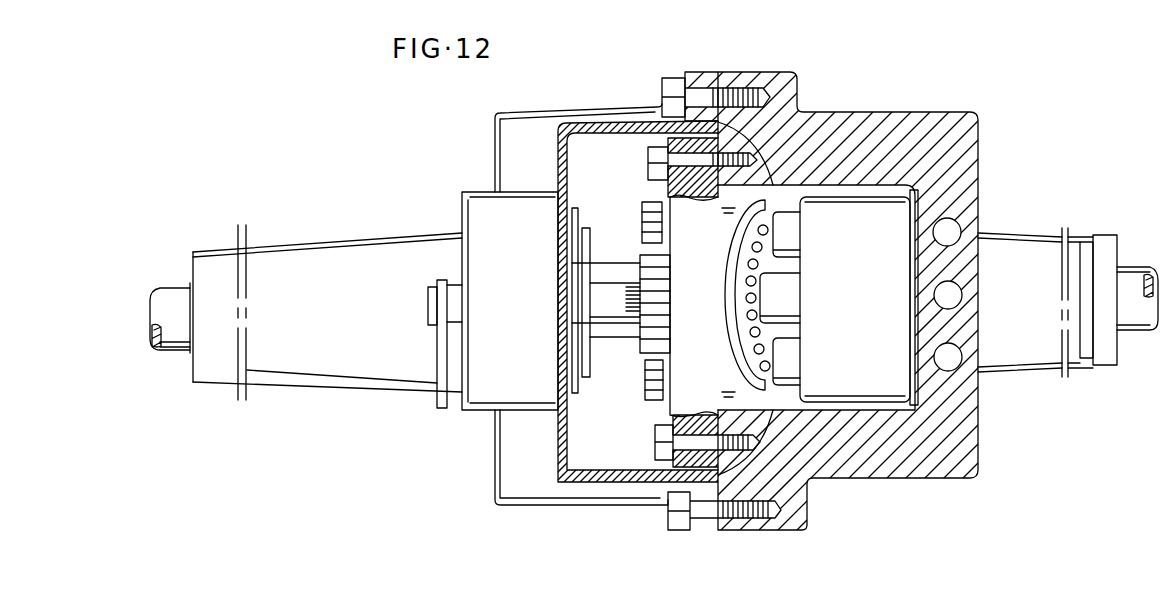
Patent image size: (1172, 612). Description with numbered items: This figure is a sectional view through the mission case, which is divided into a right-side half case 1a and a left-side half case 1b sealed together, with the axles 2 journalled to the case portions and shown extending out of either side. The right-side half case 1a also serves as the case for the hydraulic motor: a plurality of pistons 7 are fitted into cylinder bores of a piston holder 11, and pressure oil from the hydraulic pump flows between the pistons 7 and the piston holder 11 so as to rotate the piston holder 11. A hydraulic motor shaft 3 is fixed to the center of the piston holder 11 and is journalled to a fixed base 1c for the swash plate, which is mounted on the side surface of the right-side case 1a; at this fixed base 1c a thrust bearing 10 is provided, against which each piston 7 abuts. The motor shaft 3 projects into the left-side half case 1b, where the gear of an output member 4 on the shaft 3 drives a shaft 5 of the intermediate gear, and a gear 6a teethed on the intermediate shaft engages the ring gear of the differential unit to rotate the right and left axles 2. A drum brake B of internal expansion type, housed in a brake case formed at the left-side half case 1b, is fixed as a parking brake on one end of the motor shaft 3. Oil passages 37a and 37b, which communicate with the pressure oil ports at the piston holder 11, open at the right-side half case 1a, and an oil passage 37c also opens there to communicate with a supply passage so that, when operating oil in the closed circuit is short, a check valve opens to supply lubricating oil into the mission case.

The right-side half mission case 1a is at (780, 72).
The left-side half mission case 1b is at (607, 107).
The fixed base for the swash plate 1c is at (688, 393).
The axle 2 is at (189, 352).
The hydraulic motor shaft 3 is at (597, 317).
The output member 4 is at (643, 250).
The shaft on intermediate gear 5 is at (643, 393).
The gear 6a is at (615, 340).
The piston 7 is at (797, 233).
The thrust bearing 10 is at (775, 398).
The piston holder 11 is at (859, 312).
The oil passage 37a is at (950, 232).
The oil passage 37b is at (952, 357).
The oil passage 37c is at (948, 296).
The drum brake B is at (462, 420).